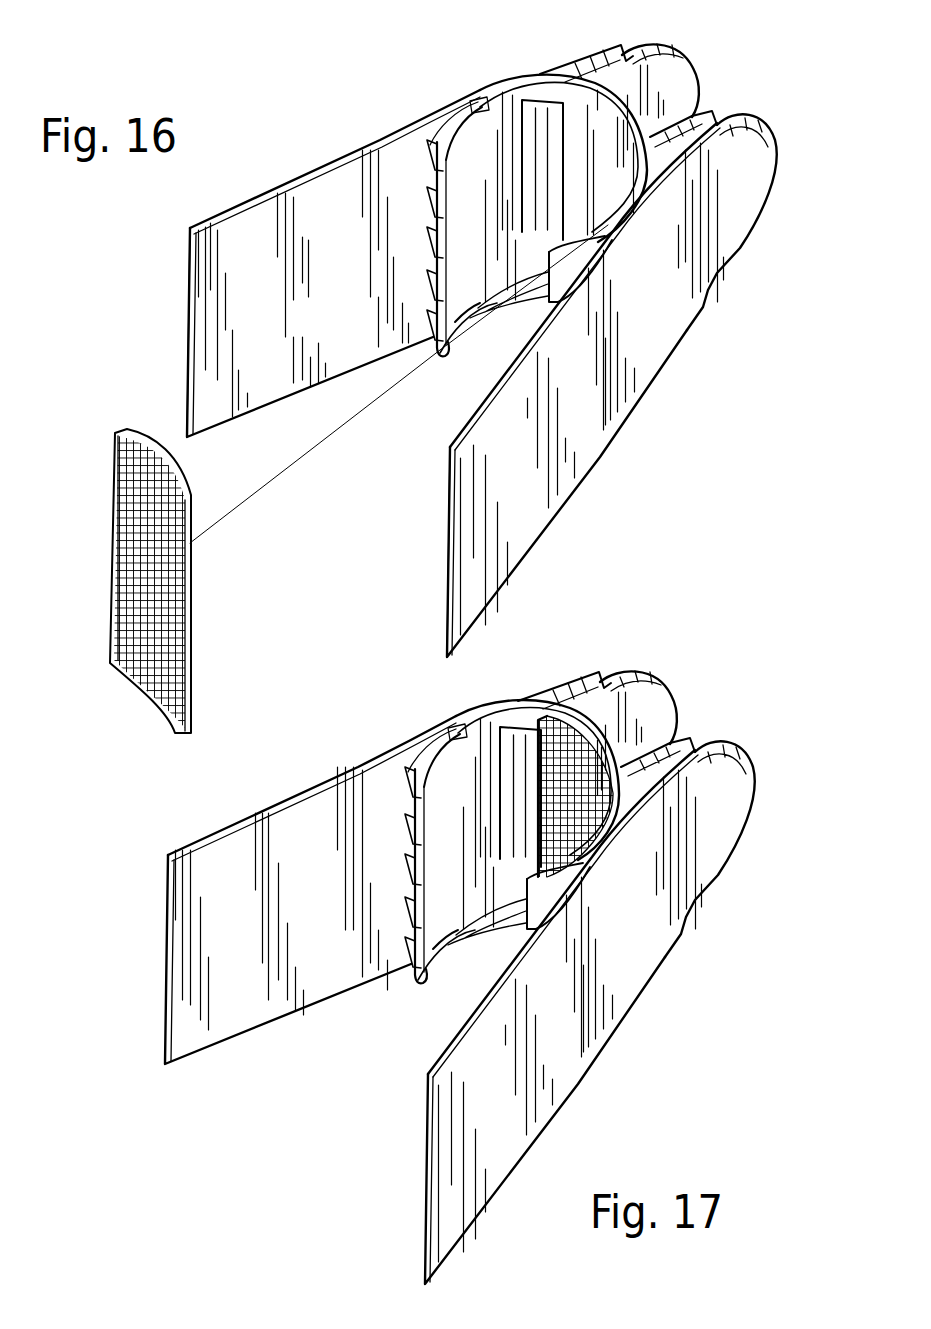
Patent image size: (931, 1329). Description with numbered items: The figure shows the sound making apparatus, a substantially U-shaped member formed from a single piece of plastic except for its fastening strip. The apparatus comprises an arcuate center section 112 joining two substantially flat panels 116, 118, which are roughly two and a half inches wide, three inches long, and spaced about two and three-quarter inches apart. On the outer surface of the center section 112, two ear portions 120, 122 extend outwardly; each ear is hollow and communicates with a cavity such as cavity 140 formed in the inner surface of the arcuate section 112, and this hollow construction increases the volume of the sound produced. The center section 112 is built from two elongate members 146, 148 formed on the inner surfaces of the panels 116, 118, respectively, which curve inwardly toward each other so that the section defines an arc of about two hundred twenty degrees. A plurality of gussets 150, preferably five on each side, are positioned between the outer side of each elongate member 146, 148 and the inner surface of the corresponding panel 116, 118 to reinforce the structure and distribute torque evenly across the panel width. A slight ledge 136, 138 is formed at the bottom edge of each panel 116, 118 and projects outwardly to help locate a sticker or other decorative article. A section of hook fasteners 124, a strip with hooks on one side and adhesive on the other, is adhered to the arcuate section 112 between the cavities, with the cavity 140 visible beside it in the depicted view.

In FIG. 16, the arcuate center section 112 is at (578, 123).
In FIG. 16, the panel 116 is at (317, 198).
In FIG. 17, the panel 116 is at (230, 850).
In FIG. 16, the panel 118 is at (587, 437).
In FIG. 17, the panel 118 is at (567, 1047).
In FIG. 16, the ear portion 120 is at (683, 97).
In FIG. 17, the ear portion 120 is at (653, 707).
In FIG. 16, the ear portion 122 is at (740, 155).
In FIG. 17, the ear portion 122 is at (727, 813).
In FIG. 16, the hook fasteners section 124 is at (117, 572).
In FIG. 17, the hook fasteners section 124 is at (560, 747).
In FIG. 16, the ledge 136 is at (207, 333).
In FIG. 16, the ledge 138 is at (445, 580).
In FIG. 16, the cavity 140 is at (547, 110).
In FIG. 17, the cavity 140 is at (523, 757).
In FIG. 16, the elongate member 146 is at (457, 123).
In FIG. 17, the elongate member 146 is at (437, 753).
In FIG. 16, the elongate member 148 is at (588, 250).
In FIG. 17, the elongate member 148 is at (553, 877).
In FIG. 16, the gusset 150 is at (420, 150).